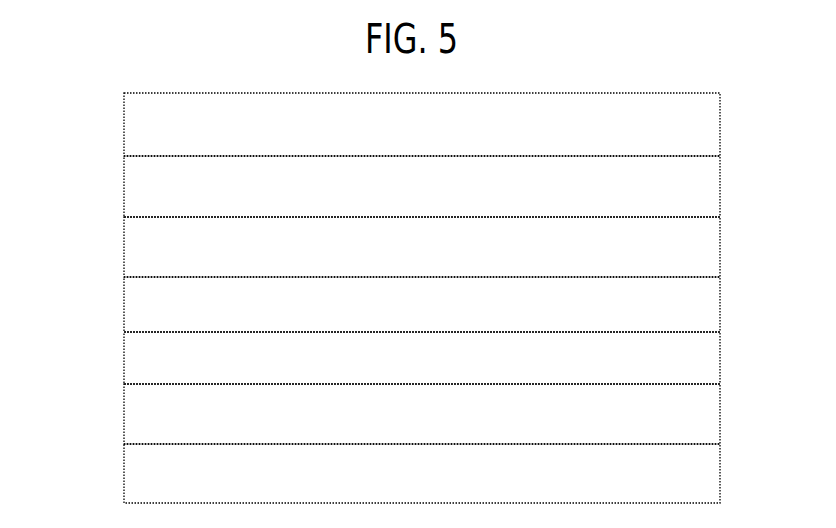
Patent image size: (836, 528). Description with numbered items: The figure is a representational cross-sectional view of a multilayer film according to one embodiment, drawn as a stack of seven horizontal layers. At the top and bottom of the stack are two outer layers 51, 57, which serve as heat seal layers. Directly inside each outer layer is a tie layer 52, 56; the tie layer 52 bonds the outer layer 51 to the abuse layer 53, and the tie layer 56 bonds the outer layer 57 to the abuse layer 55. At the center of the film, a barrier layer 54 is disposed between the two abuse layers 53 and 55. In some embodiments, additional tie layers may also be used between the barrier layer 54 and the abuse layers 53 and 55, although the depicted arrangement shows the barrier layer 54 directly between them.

The outer layer 51 is at (675, 124).
The tie layer 52 is at (160, 190).
The abuse layer 53 is at (679, 255).
The barrier layer 54 is at (153, 303).
The abuse layer 55 is at (660, 360).
The tie layer 56 is at (160, 418).
The outer layer 57 is at (672, 482).